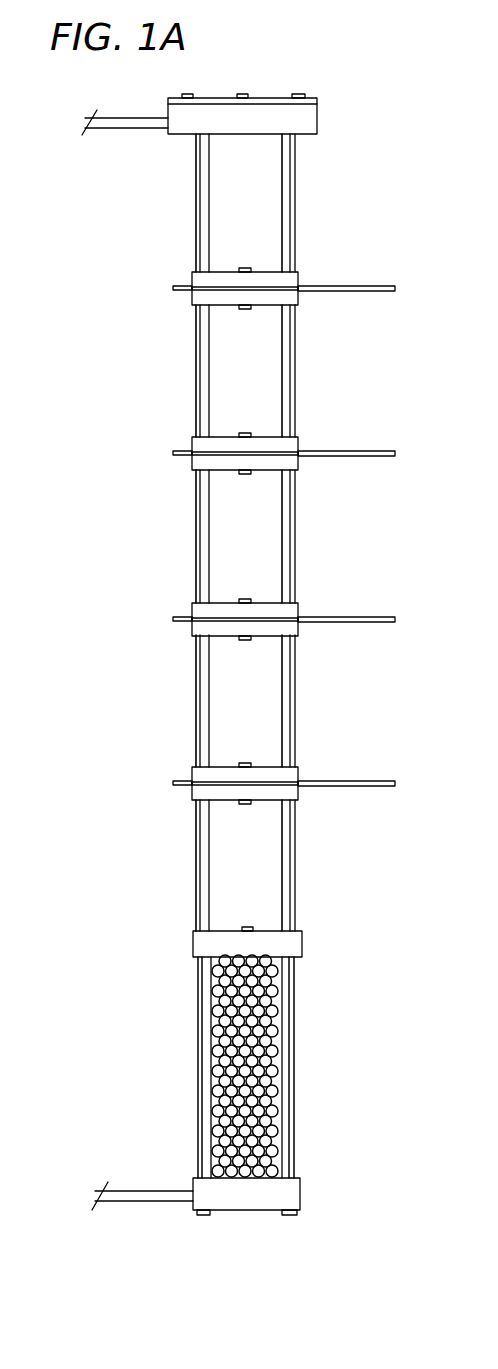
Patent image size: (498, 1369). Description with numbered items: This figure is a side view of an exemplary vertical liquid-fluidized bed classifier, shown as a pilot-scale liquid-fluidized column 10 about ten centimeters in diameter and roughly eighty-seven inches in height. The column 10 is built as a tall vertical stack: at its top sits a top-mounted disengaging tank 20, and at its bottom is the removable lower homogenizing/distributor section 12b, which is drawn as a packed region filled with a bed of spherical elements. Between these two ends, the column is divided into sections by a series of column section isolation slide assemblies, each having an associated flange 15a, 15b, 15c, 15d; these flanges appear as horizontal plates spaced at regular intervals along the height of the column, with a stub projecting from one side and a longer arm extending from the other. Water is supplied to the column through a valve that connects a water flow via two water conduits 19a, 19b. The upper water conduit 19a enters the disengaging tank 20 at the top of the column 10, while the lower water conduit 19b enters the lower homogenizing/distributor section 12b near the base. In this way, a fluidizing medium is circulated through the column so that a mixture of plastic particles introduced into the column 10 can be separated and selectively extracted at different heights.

The liquid-fluidized column 10 is at (146, 1005).
The disengaging tank 20 is at (318, 113).
The water conduit 19a is at (132, 128).
The water conduit 19b is at (148, 1192).
The flange 15a is at (298, 273).
The flange 15b is at (298, 438).
The flange 15c is at (298, 604).
The flange 15d is at (298, 768).
The lower homogenizing/distributor section 12b is at (265, 1062).